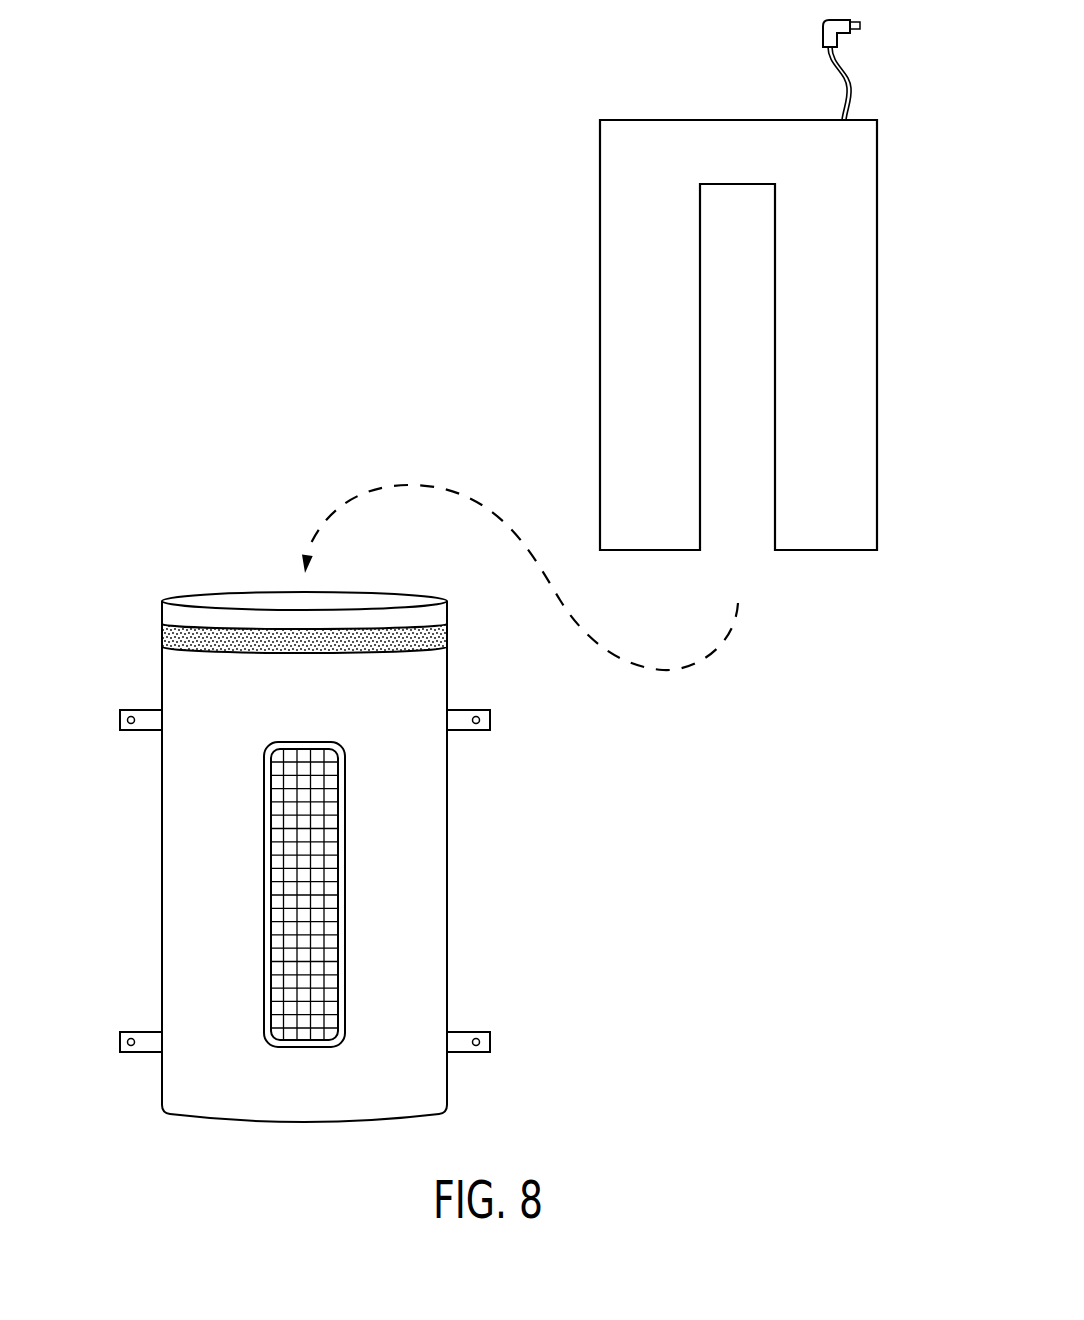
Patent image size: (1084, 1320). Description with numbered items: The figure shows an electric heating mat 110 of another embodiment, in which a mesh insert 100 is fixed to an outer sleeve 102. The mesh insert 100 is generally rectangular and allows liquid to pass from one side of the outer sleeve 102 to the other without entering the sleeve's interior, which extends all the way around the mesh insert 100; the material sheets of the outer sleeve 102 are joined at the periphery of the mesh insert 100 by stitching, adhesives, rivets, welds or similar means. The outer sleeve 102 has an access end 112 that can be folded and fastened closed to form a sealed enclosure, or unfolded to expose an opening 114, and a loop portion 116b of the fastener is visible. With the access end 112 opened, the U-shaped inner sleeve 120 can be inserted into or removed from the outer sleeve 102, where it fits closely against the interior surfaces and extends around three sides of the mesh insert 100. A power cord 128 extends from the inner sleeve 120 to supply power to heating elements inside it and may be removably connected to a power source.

The mesh insert 100 is at (345, 962).
The outer sleeve 102 is at (450, 835).
The heating system assembly 110 is at (258, 365).
The access end 112 is at (125, 645).
The opening 114 is at (195, 595).
The loop portion of the fastener 116b is at (215, 638).
The inner sleeve 120 is at (878, 312).
The power cord 128 is at (853, 79).